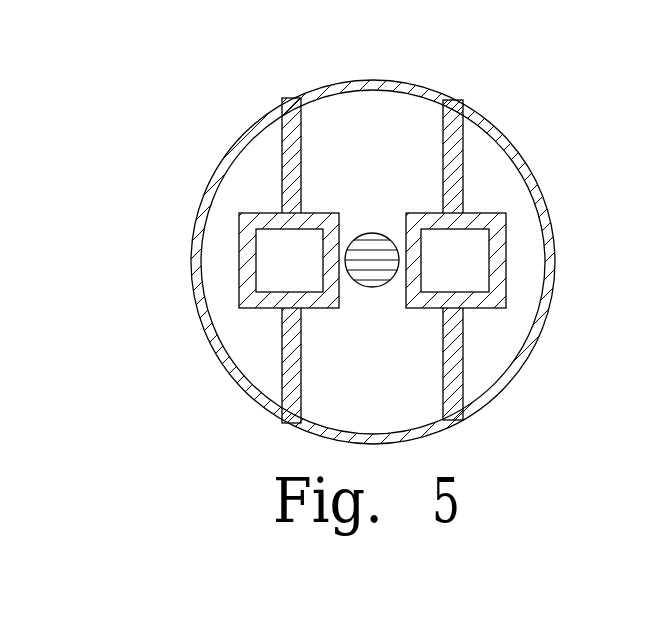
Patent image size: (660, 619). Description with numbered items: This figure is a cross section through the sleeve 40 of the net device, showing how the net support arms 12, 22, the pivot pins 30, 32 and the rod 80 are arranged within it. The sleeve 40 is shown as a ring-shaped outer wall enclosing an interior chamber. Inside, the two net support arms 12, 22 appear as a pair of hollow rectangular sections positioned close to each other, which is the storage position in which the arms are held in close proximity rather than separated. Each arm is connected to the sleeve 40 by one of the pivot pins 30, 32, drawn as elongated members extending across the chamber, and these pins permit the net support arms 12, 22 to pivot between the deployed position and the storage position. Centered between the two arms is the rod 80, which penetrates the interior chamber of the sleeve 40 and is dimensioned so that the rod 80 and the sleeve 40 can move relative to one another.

The sleeve 40 is at (520, 130).
The rod 80 is at (373, 222).
The net support arm 22 is at (226, 257).
The net support arm 12 is at (522, 258).
The pivot pin 32 is at (269, 355).
The pivot pin 30 is at (474, 355).